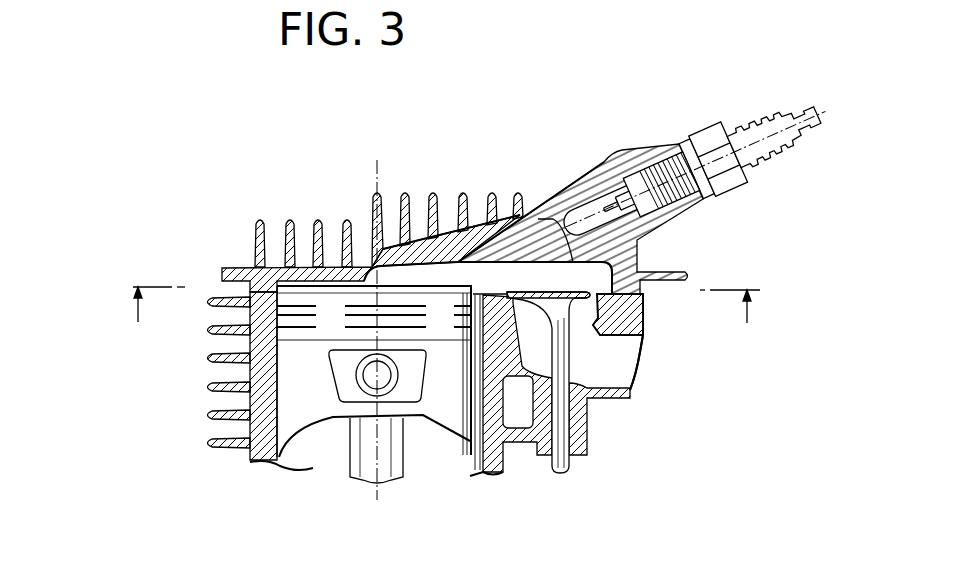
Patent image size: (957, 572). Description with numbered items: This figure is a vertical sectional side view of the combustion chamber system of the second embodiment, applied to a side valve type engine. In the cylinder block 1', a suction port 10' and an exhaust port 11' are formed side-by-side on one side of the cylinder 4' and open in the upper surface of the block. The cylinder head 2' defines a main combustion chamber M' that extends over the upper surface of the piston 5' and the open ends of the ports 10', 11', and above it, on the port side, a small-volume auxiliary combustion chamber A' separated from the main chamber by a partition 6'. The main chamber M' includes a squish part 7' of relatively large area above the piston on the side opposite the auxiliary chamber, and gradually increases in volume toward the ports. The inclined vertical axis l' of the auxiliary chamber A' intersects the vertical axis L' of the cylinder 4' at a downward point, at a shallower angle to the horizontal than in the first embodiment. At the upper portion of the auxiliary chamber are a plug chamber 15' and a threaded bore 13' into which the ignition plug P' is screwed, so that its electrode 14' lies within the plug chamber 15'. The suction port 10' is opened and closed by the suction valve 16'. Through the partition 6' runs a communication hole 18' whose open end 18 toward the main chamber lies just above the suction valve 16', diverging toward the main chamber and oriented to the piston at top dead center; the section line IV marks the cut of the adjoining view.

The cylinder block 1' is at (426, 384).
The cylinder head 2' is at (462, 219).
The cylinder 4' is at (500, 402).
The piston 5' is at (392, 446).
The partition 6' is at (488, 262).
The squish part 7' is at (374, 371).
The suction port 10' is at (633, 314).
The exhaust port 11' is at (671, 352).
The threaded bore 13' is at (661, 167).
The electrode 14' is at (618, 176).
The plug chamber 15' is at (596, 183).
The suction valve 16' is at (553, 382).
The squish area 18 is at (578, 240).
The communication hole 18' is at (511, 281).
The auxiliary combustion chamber A' is at (593, 203).
The vertical axis of the cylinder L' is at (374, 334).
The main combustion chamber M' is at (447, 371).
The ignition plug P' is at (702, 154).
The vertical axis of the auxiliary chamber l' is at (680, 176).
The section line IV- IV is at (442, 309).